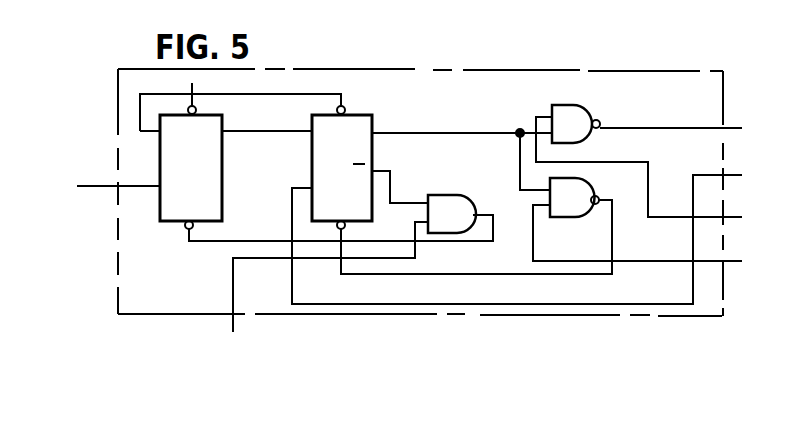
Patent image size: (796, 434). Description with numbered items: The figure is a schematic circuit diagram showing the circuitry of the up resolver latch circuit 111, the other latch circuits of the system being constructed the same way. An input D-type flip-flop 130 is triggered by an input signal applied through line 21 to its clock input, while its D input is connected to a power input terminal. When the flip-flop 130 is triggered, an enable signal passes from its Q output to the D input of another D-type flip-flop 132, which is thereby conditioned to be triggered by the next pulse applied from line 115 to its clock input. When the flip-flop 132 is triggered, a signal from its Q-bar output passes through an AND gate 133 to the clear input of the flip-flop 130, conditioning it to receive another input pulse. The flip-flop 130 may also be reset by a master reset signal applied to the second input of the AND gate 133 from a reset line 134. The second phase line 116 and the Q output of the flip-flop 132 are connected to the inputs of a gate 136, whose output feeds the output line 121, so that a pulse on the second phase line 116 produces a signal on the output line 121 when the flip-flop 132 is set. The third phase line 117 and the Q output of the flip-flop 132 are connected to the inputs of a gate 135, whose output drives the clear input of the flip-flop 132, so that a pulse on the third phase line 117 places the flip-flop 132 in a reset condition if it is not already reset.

The up resolver latch circuit 111 is at (495, 70).
The input D-type flip-flop 130 is at (222, 167).
The D-type flip-flop 132 is at (372, 162).
The AND gate 133 is at (450, 195).
The reset line 134 is at (233, 268).
The gate 135 is at (560, 210).
The gate 136 is at (572, 109).
The line 21 is at (112, 188).
The output line 121 is at (728, 128).
The line 115 is at (728, 175).
The second phase line 116 is at (728, 217).
The third phase line 117 is at (728, 261).